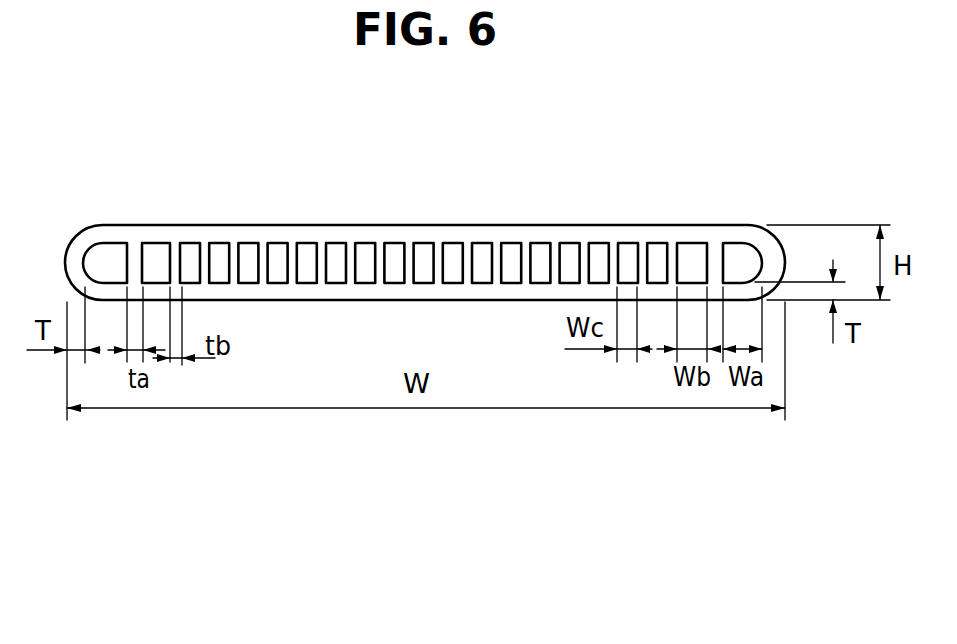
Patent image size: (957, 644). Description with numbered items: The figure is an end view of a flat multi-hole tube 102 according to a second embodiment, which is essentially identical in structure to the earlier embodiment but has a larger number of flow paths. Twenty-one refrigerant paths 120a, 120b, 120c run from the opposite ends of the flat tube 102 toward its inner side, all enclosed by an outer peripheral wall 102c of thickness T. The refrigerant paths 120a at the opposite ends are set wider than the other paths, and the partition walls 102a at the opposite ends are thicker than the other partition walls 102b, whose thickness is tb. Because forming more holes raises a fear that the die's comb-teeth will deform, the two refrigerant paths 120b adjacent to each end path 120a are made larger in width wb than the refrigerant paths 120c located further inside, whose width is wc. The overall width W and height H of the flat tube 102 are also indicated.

The flat tube 102 is at (485, 210).
The partition walls at the opposite ends 102a is at (127, 258).
The partition walls 102b is at (212, 260).
The outer peripheral wall 102c is at (80, 258).
The refrigerant paths at the opposite ends 120a is at (742, 250).
The refrigerant paths adjacent to the end paths 120b is at (692, 250).
The refrigerant paths located further inside 120c is at (652, 250).